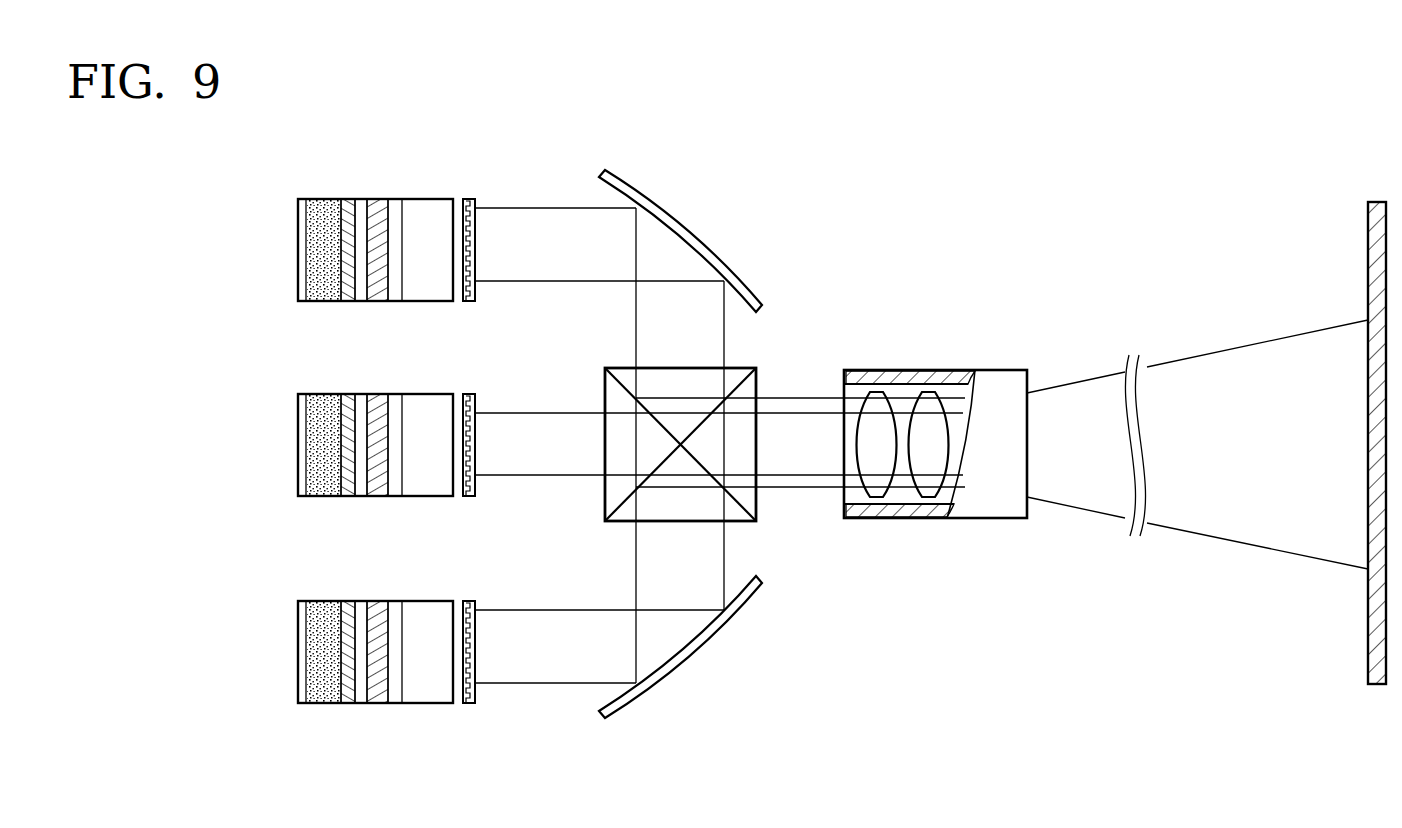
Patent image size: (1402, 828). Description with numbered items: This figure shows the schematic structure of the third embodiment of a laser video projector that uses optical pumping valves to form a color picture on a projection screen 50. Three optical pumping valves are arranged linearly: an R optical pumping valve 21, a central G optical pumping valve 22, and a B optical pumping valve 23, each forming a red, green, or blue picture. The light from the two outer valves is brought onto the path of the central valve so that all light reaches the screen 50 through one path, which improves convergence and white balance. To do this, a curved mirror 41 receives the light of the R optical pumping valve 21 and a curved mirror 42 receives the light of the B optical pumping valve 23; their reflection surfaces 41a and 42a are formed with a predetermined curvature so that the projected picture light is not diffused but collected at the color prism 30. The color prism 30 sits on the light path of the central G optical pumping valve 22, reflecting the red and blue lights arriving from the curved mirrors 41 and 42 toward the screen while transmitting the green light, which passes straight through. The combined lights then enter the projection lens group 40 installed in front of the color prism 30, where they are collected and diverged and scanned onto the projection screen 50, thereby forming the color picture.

The R optical pumping valve 21 is at (404, 199).
The G optical pumping valve 22 is at (404, 394).
The B optical pumping valve 23 is at (404, 601).
The color prism 30 is at (768, 525).
The projection lens group 40 is at (988, 520).
The curved mirror 41 is at (746, 272).
The reflection surface 41a is at (664, 234).
The curved mirror 42 is at (750, 618).
The reflection surface 42a is at (666, 655).
The projection screen 50 is at (1367, 270).